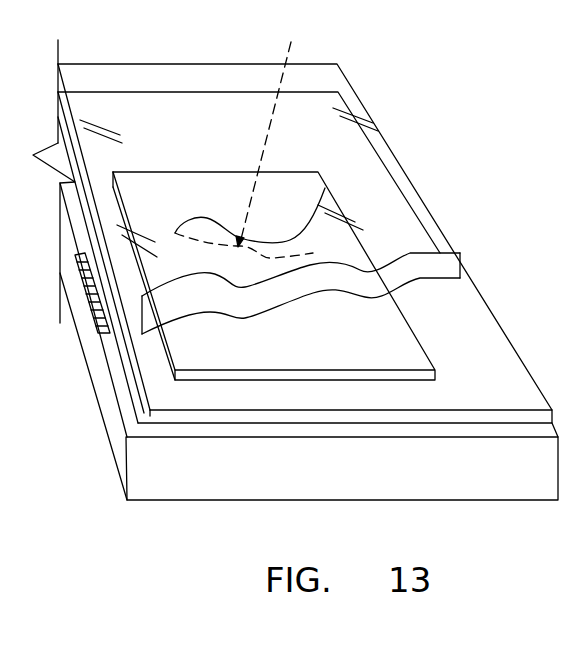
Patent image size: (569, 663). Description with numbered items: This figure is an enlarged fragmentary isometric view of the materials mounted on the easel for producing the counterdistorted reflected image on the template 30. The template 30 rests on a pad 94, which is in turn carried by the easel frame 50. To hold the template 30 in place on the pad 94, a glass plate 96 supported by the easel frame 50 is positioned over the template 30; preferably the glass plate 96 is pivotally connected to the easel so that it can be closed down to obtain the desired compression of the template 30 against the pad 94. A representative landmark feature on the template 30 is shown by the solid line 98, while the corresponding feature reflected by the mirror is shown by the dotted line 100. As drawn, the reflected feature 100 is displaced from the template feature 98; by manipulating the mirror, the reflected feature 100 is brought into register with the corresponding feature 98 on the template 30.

The template 30 is at (387, 348).
The easel frame 50 is at (107, 399).
The pad 94 is at (450, 322).
The glass plate 96 is at (325, 73).
The solid line 98 is at (205, 218).
The dotted line 100 is at (252, 250).